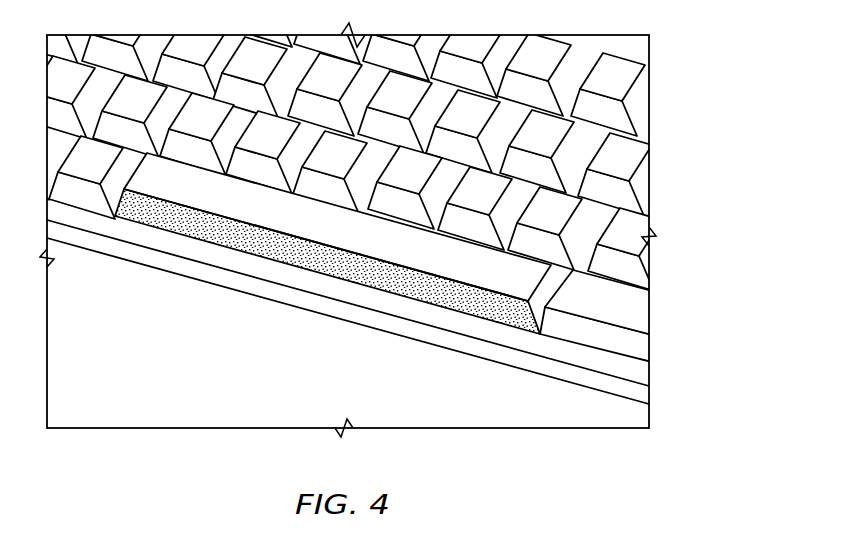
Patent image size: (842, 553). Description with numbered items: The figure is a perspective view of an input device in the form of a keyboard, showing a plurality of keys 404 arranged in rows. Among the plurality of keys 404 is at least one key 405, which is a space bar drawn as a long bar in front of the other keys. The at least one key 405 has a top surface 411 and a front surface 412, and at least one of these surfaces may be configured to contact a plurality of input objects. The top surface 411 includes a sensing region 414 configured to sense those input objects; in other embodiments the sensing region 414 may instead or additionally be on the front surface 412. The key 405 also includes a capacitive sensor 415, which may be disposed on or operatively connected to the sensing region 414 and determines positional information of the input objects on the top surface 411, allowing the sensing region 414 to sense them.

The plurality of keys 404 is at (623, 148).
The at least one key 405 is at (396, 251).
The top surface 411 is at (507, 272).
The front surface 412 is at (548, 324).
The sensing region 414 is at (248, 210).
The capacitive sensor 415 is at (298, 218).